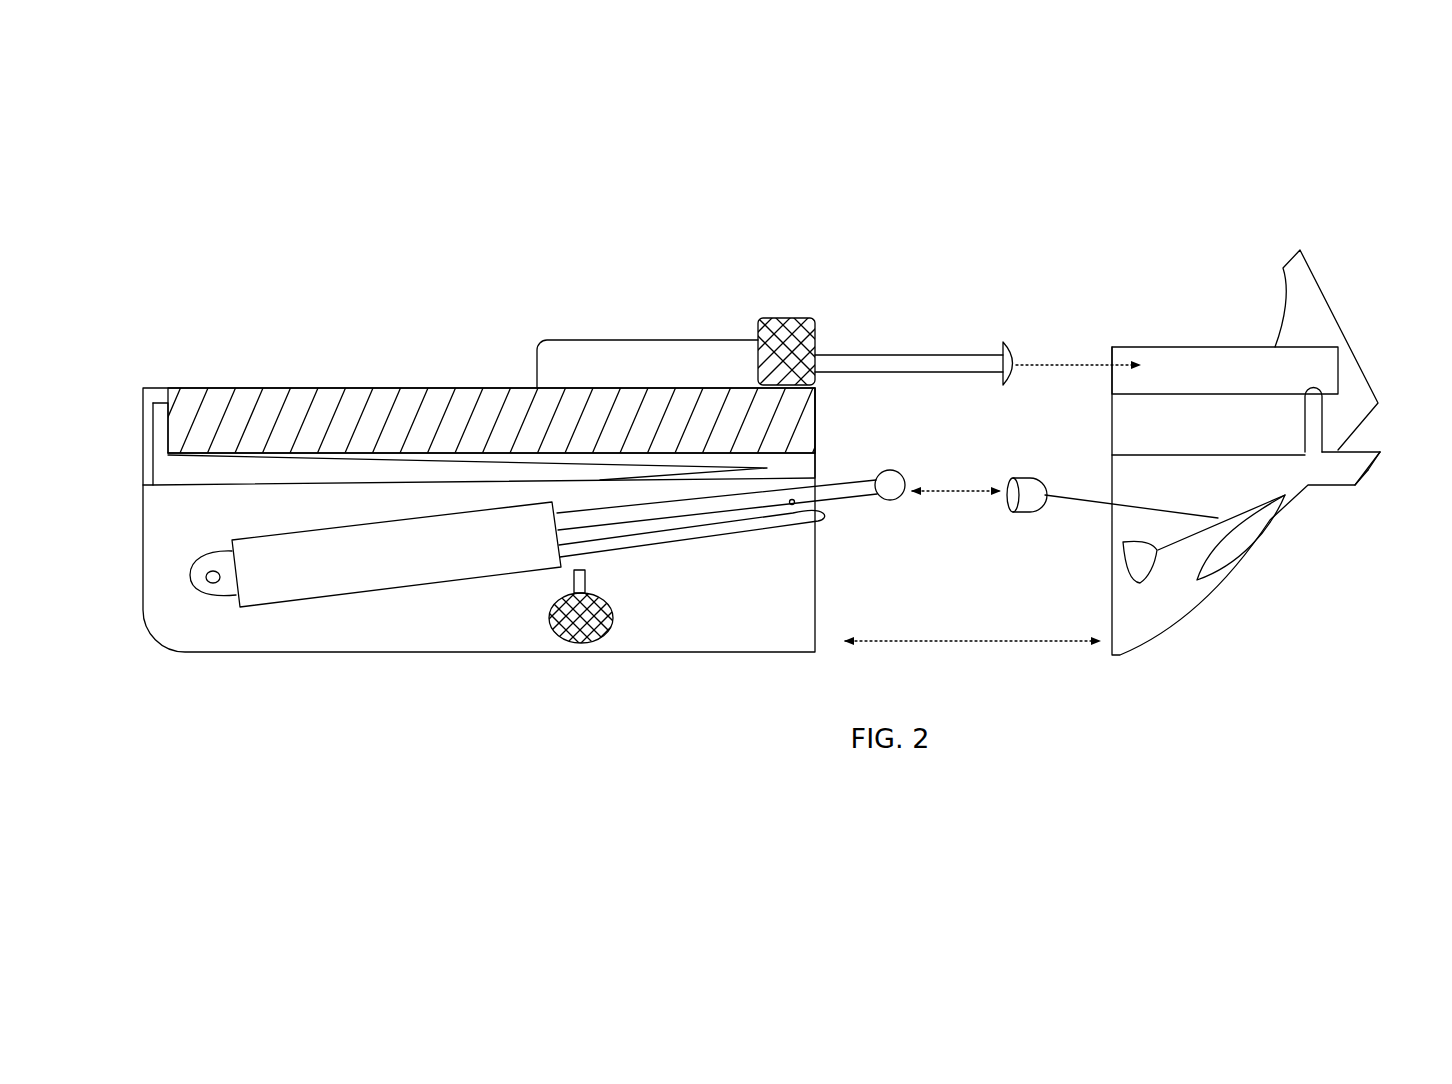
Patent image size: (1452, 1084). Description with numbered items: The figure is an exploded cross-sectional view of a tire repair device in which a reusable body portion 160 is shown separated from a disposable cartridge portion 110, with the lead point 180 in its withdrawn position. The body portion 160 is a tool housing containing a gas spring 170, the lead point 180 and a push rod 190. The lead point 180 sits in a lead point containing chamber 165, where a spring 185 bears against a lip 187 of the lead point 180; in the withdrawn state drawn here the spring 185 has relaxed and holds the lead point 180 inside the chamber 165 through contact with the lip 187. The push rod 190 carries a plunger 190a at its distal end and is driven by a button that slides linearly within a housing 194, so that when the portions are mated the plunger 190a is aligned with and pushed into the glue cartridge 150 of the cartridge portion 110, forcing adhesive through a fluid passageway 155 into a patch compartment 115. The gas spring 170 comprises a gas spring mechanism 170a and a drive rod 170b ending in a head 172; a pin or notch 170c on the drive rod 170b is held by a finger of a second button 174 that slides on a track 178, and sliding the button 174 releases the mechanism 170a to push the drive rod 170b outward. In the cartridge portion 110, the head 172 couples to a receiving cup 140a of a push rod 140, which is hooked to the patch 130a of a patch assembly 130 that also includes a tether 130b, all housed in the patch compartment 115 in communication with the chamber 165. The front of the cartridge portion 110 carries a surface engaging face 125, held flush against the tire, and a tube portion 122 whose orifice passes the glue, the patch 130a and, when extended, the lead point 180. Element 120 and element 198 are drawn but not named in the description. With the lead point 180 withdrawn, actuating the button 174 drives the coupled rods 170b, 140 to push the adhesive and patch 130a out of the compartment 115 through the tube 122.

The cartridge portion 110 is at (1227, 597).
The patch compartment 115 is at (1246, 468).
The tip 120 is at (1372, 462).
The tube portion 122 is at (1340, 490).
The surface engaging face 125 is at (1367, 413).
The patch assembly 130 is at (1273, 518).
The patch 130a is at (1200, 562).
The tether 130b is at (1133, 568).
The push rod 140 is at (1068, 497).
The receiving end or cup 140a is at (1010, 510).
The glue cartridge 150 is at (1225, 370).
The fluid passageway 155 is at (1303, 433).
The body portion 160 is at (237, 652).
The lead point containing chamber 165 is at (815, 400).
The gas spring 170 is at (545, 614).
The gas spring mechanism 170a is at (375, 554).
The drive rod 170b is at (838, 505).
The pin or notch 170c is at (792, 505).
The head 172 is at (904, 497).
The second button 174 is at (605, 630).
The track 178 is at (588, 578).
The lead point 180 is at (484, 469).
The spring 185 is at (287, 400).
The lip 187 is at (162, 403).
The push rod 190 is at (975, 355).
The plunger 190a is at (1015, 358).
The housing 194 is at (815, 320).
The cover 198 is at (633, 340).